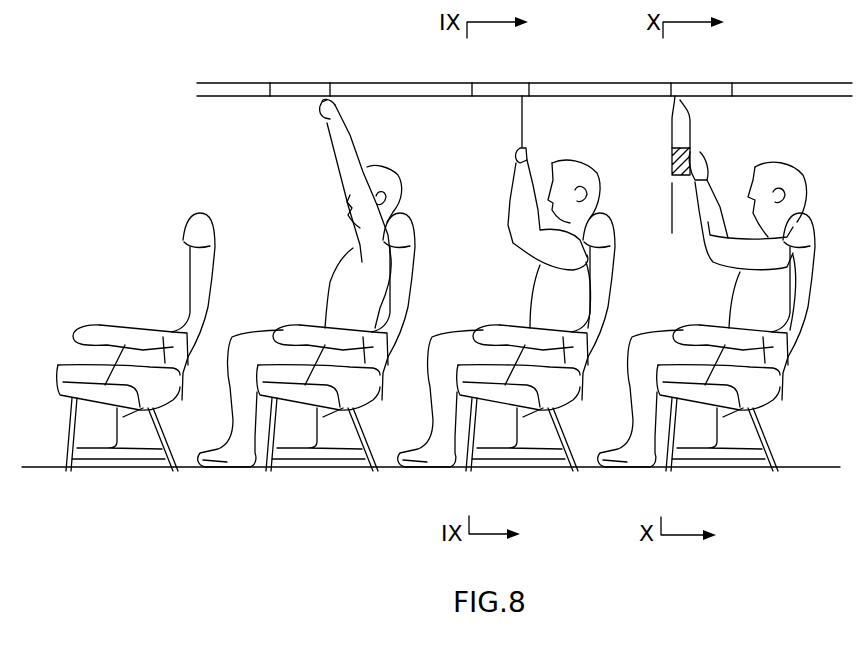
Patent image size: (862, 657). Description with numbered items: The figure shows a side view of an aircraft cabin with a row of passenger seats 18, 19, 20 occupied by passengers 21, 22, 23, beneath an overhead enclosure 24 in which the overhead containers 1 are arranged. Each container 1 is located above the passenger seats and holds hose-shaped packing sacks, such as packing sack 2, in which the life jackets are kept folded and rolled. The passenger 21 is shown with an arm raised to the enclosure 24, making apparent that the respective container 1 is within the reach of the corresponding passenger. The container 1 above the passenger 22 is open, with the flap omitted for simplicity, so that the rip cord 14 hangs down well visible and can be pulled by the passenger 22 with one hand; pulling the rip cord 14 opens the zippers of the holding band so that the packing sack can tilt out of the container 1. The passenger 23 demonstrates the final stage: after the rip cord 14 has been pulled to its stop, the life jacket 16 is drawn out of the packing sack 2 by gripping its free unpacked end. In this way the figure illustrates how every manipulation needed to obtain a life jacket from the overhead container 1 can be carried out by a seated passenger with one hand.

The container 1 is at (301, 92).
The enclosure 24 is at (763, 92).
The rip cord 14 is at (524, 118).
The packing sack 2 is at (684, 137).
The life jacket 16 is at (693, 157).
The passenger seat 18 is at (412, 277).
The passenger seat 19 is at (604, 305).
The passenger seat 20 is at (804, 306).
The passenger 21 is at (362, 314).
The passenger 22 is at (565, 317).
The passenger 23 is at (765, 317).